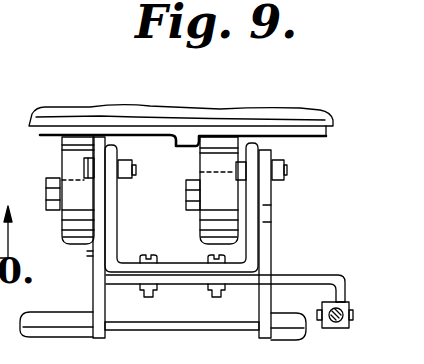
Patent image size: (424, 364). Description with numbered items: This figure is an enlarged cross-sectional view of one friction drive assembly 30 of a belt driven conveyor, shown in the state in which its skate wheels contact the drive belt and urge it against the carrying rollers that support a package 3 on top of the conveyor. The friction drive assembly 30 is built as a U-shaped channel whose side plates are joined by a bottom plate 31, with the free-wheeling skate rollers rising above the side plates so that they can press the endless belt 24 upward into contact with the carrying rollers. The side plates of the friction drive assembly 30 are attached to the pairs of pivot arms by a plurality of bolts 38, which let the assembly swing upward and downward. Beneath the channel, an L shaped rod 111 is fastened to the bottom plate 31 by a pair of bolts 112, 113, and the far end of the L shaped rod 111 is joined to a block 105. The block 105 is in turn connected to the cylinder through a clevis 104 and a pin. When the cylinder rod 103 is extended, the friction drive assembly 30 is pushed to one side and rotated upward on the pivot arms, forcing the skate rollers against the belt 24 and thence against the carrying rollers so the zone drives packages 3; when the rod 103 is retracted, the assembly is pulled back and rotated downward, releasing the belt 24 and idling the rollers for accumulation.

The package 3 is at (265, 113).
The endless belt 24 is at (327, 134).
The friction drive assembly 30 is at (294, 206).
The bottom plate 31 is at (189, 264).
The bolts 38 is at (83, 164).
The L shaped rod 111 is at (322, 275).
The bolt 112 is at (143, 290).
The bolt 113 is at (210, 290).
The block 105 is at (347, 293).
The rod 103 is at (352, 308).
The clevis 104 is at (346, 328).